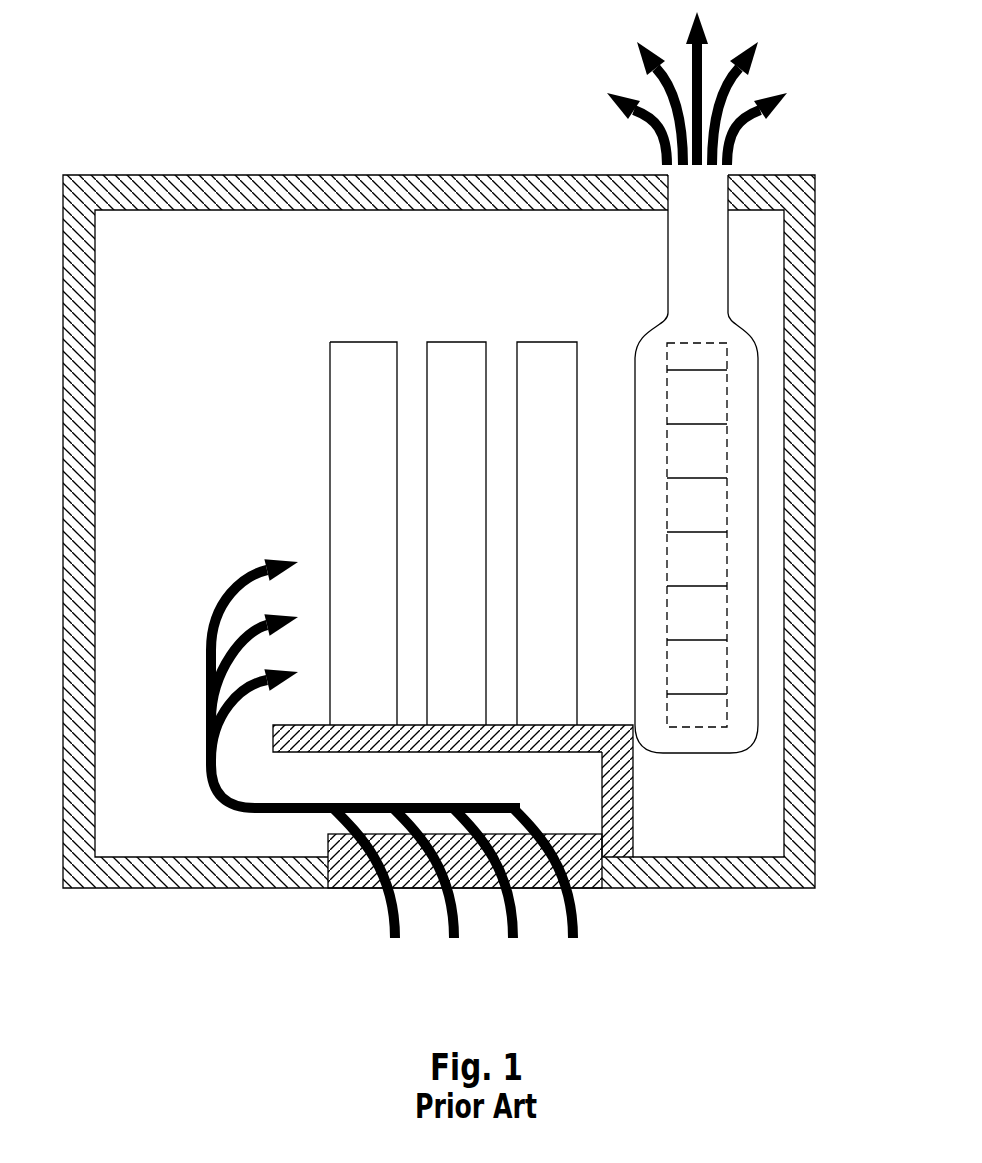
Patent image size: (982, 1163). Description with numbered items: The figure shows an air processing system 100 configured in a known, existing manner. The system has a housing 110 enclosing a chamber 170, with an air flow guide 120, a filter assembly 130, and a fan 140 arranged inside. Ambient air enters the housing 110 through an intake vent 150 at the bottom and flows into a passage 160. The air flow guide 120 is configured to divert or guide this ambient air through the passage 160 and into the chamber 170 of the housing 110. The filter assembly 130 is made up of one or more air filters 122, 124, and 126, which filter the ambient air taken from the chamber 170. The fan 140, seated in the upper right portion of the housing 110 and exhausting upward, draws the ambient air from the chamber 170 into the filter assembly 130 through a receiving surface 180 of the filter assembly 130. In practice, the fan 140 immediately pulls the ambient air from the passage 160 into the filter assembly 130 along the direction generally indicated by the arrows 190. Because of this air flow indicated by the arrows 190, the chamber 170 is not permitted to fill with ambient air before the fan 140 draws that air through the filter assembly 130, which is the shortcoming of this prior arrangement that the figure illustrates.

The air processing system 100 is at (397, 53).
The housing 110 is at (453, 175).
The air flow guide 120 is at (633, 806).
The air filter 122 is at (349, 342).
The air filter 124 is at (457, 342).
The air filter 126 is at (548, 342).
The filter assembly 130 is at (452, 261).
The fan 140 is at (667, 256).
The intake vent 150 is at (350, 888).
The passage 160 is at (327, 787).
The chamber 170 is at (211, 259).
The receiving surface 180 is at (330, 400).
The arrows 190 is at (207, 718).